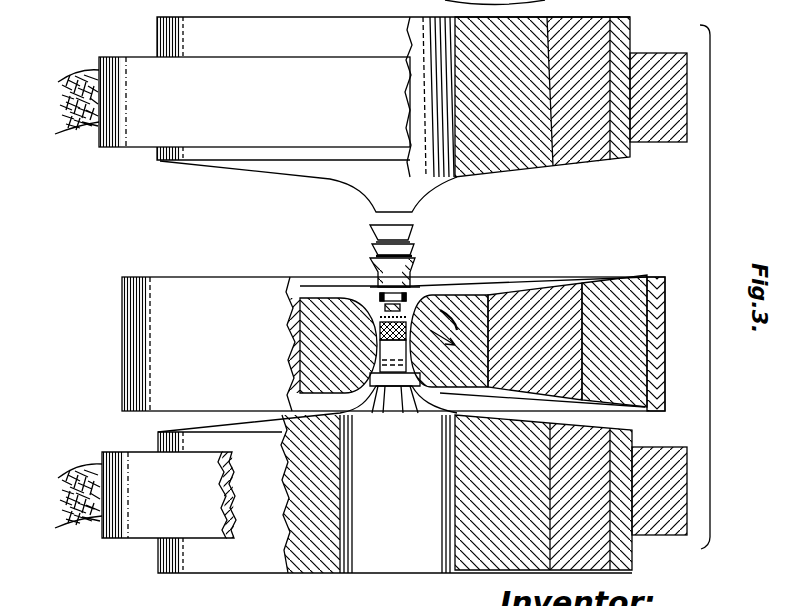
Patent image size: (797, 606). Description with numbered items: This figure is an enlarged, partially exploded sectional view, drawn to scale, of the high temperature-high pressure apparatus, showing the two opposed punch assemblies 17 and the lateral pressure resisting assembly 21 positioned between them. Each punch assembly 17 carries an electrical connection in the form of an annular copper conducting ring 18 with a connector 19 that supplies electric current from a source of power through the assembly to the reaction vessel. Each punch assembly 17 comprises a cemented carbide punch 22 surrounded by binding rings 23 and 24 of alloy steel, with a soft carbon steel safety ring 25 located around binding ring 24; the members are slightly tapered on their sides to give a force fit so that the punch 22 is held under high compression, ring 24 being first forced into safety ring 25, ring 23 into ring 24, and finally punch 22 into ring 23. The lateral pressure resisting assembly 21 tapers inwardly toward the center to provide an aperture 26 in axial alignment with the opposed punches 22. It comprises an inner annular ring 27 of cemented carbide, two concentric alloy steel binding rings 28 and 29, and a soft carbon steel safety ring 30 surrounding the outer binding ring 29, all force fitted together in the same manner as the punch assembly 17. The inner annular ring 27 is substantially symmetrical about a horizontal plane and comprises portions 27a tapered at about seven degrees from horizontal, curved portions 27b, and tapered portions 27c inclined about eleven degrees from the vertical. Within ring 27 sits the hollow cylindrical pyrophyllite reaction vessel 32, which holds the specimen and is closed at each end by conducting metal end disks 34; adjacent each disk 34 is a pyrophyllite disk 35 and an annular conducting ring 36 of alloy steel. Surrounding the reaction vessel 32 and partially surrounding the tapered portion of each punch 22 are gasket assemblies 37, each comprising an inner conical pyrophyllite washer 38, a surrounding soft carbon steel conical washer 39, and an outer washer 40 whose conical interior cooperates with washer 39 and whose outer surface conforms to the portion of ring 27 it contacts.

The punch assembly 17 is at (157, 167).
The annular copper conducting ring 18 is at (112, 134).
The connector 19 is at (68, 84).
The lateral pressure resisting assembly 21 is at (110, 340).
The punch 22 is at (436, 195).
The binding ring 23 is at (514, 160).
The binding ring 24 is at (584, 162).
The soft carbon steel safety ring 25 is at (620, 157).
The aperture 26 is at (425, 296).
The inner annular ring 27 is at (480, 300).
The tapered portions 27a is at (456, 300).
The curved portions 27b is at (440, 380).
The tapered portions 27c is at (416, 330).
The binding ring 28 is at (553, 292).
The binding ring 29 is at (613, 284).
The soft carbon steel safety ring 30 is at (658, 277).
The reaction vessel 32 is at (380, 330).
The conducting metal end disk 34 is at (406, 297).
The pyrophyllite disk 35 is at (385, 307).
The annular conducting ring 36 is at (384, 292).
The gasket assembly 37 is at (422, 212).
The inner conical pyrophyllite washer 38 is at (376, 236).
The soft carbon steel conical washer 39 is at (378, 250).
The washer 40 is at (376, 266).